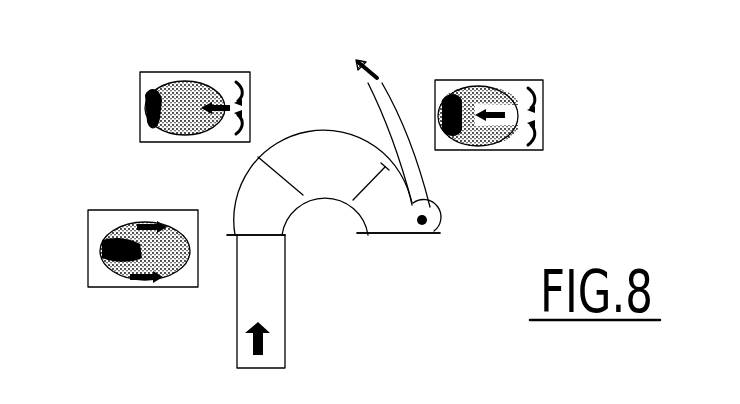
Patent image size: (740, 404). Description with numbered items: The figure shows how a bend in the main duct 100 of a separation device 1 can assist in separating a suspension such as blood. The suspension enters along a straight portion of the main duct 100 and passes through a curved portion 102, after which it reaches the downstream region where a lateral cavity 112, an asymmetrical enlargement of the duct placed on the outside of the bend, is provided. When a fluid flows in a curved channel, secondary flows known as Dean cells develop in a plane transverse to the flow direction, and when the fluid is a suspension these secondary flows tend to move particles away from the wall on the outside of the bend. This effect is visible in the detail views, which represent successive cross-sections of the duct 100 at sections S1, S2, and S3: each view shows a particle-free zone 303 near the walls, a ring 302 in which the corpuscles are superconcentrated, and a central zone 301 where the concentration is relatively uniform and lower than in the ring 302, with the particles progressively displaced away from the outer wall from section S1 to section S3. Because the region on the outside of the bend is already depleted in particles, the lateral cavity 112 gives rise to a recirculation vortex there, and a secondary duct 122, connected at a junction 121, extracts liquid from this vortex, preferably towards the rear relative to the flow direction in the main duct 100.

The flow direction arrow / apparatus 1 is at (293, 303).
The main duct 100 is at (276, 351).
The curved channel section 102 is at (309, 138).
The lateral cavity 112 is at (425, 233).
The pivot point 121 is at (437, 220).
The secondary duct 122 is at (398, 102).
The central zone 301 is at (182, 100).
The ring 302 is at (168, 85).
The particle-free zone 303 is at (232, 132).
The section S1 is at (283, 236).
The section S2 is at (303, 195).
The section S3 is at (384, 165).